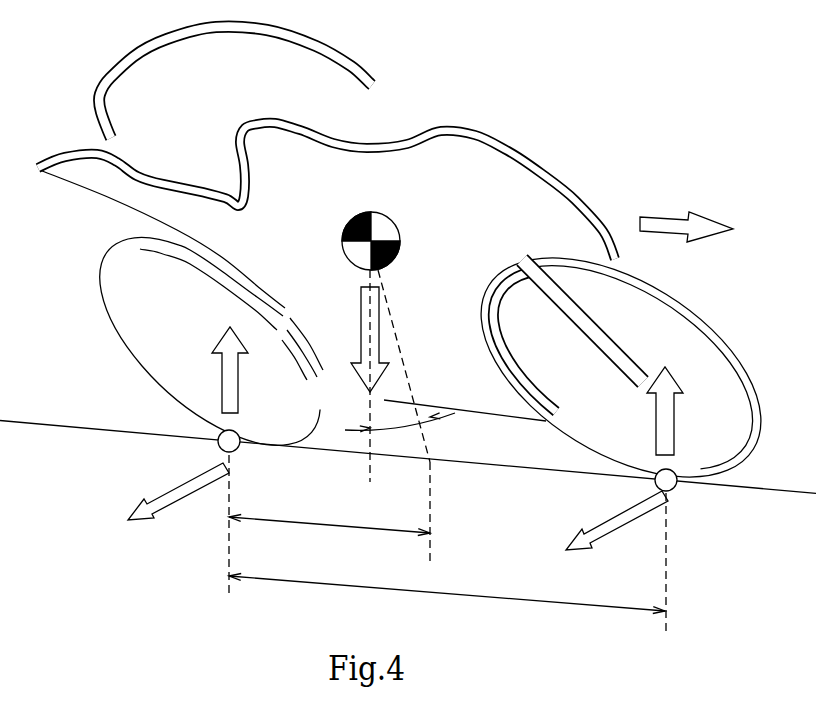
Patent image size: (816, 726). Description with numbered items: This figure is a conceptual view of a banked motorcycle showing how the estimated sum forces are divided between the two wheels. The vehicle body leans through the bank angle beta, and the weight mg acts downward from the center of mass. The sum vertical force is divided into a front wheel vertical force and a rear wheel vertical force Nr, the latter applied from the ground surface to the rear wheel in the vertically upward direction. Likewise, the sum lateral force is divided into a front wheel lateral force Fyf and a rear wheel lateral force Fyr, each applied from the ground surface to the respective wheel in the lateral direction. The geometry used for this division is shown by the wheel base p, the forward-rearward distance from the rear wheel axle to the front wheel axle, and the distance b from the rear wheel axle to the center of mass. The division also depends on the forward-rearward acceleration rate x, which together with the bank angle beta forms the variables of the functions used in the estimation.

The rear wheel vertical force Nr is at (463, 388).
The gravitational force at center of mass mg is at (363, 314).
The forward-rearward acceleration rate x is at (686, 209).
The rear wheel lateral force Fyr is at (178, 508).
The front wheel lateral force Fyf is at (617, 535).
The distance from the rear wheel axle to the center of mass b is at (329, 512).
The wheel base p is at (447, 584).
The bank angle beta is at (400, 383).